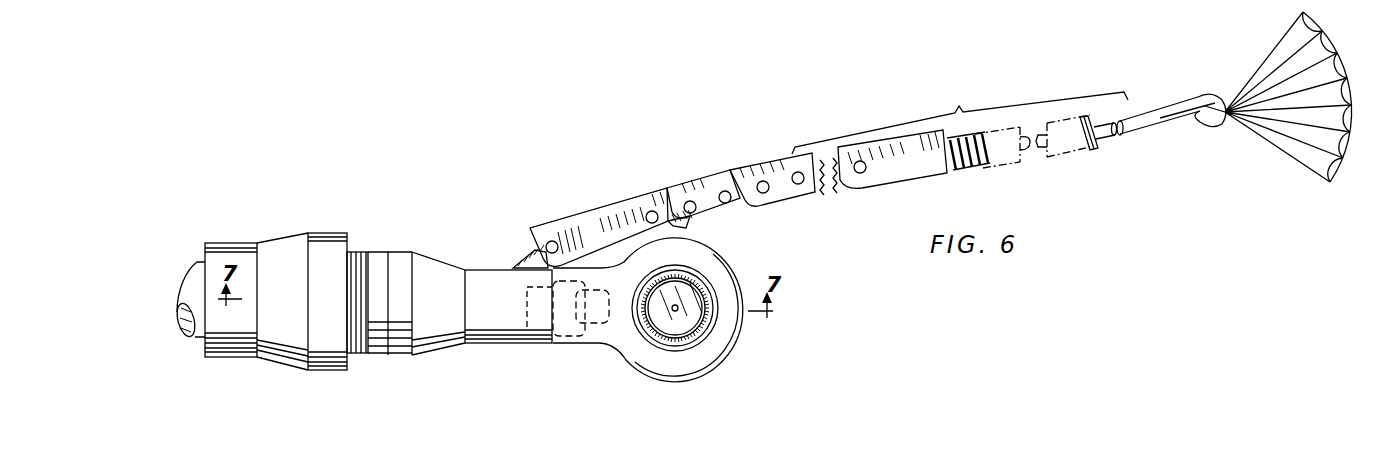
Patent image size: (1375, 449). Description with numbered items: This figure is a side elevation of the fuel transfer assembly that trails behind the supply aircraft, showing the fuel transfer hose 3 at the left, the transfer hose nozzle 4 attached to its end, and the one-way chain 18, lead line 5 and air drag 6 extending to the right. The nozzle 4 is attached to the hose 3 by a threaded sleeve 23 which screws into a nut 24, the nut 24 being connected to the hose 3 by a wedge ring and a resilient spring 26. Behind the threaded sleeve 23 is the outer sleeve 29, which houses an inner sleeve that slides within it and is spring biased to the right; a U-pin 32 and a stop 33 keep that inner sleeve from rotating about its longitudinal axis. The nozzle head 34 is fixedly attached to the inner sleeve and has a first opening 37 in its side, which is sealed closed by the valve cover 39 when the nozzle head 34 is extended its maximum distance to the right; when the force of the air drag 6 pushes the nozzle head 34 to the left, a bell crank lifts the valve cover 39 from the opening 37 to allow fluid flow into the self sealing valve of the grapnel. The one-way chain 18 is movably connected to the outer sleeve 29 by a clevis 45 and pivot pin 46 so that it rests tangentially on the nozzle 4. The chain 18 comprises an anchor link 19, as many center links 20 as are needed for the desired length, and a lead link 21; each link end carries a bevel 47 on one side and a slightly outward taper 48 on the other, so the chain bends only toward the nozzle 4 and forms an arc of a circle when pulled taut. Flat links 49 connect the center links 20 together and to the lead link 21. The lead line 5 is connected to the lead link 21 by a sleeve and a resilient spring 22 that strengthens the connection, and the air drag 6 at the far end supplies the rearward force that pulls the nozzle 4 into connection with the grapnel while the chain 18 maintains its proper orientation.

The fuel transfer hose 3 is at (196, 262).
The transfer hose nozzle 4 is at (490, 360).
The lead line 5 is at (1132, 133).
The air drag 6 is at (1328, 170).
The one-way chain 18 is at (670, 172).
The anchor link 19 is at (598, 215).
The center links 20 is at (732, 165).
The lead link 21 is at (890, 170).
The resilient spring 22 is at (978, 165).
The threaded sleeve 23 is at (360, 252).
The nut 24 is at (323, 233).
The resilient spring 26 is at (221, 243).
The outer sleeve 29 is at (481, 274).
The U-pin 32 is at (566, 338).
The stop 33 is at (598, 326).
The nozzle head 34 is at (733, 345).
The first opening 37 is at (668, 328).
The valve cover 39 is at (698, 298).
The clevis 45 is at (520, 265).
The pivot pin 46 is at (549, 243).
The bevel 47 is at (705, 214).
The outward taper 48 is at (663, 200).
The flat links 49 is at (838, 190).